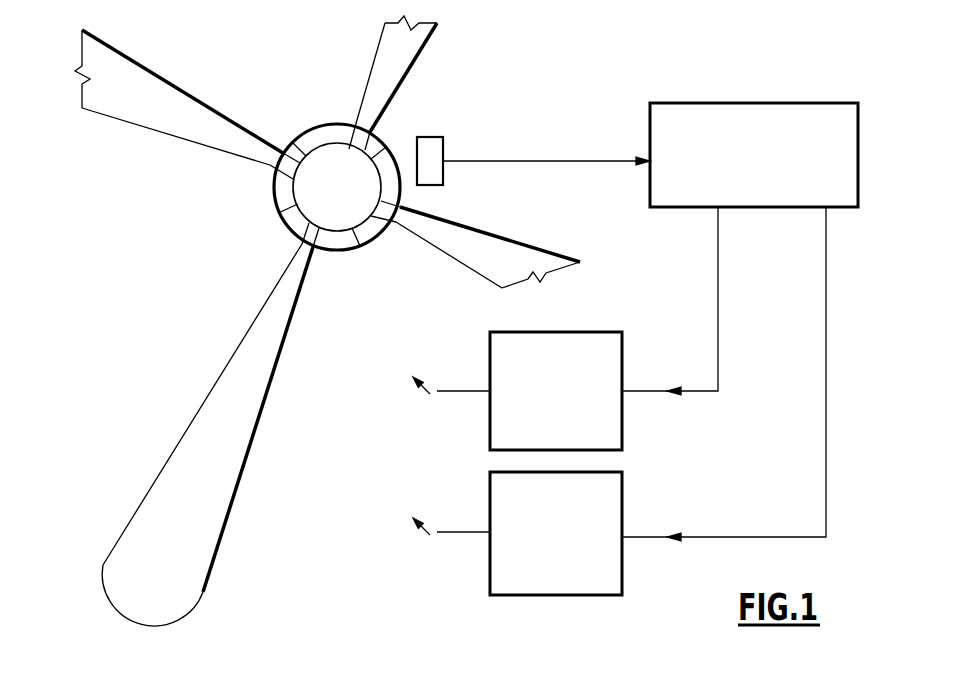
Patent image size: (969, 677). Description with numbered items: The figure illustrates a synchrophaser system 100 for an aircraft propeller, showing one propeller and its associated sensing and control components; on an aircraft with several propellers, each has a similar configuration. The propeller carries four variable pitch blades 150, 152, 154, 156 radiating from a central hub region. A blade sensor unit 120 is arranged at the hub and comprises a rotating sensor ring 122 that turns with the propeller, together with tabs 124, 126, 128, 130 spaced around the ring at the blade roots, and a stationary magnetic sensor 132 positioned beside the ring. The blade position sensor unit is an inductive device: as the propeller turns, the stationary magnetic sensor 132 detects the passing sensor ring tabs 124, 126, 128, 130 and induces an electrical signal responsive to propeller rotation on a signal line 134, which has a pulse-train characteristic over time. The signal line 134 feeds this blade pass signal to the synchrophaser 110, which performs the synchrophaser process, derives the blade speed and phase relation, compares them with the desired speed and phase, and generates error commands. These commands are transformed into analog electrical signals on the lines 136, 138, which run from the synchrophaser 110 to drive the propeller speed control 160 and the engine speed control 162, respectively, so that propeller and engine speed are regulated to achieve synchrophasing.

The synchrophaser system 100 is at (543, 78).
The synchrophaser 110 is at (798, 118).
The blade sensor unit 120 is at (415, 112).
The rotating sensor ring 122 is at (384, 147).
The tab 124 is at (270, 167).
The tab 126 is at (358, 124).
The tab 128 is at (393, 219).
The tab 130 is at (300, 242).
The stationary magnetic sensor 132 is at (433, 186).
The signal line 134 is at (540, 161).
The signal line 136 is at (826, 290).
The signal line 138 is at (718, 290).
The variable pitch blade 150 is at (432, 22).
The variable pitch blade 152 is at (163, 92).
The variable pitch blade 154 is at (270, 345).
The variable pitch blade 156 is at (490, 265).
The propeller speed control 160 is at (610, 485).
The engine speed control 162 is at (610, 352).